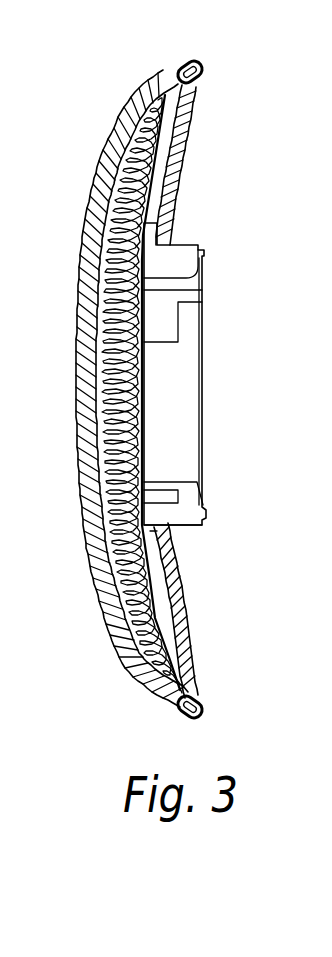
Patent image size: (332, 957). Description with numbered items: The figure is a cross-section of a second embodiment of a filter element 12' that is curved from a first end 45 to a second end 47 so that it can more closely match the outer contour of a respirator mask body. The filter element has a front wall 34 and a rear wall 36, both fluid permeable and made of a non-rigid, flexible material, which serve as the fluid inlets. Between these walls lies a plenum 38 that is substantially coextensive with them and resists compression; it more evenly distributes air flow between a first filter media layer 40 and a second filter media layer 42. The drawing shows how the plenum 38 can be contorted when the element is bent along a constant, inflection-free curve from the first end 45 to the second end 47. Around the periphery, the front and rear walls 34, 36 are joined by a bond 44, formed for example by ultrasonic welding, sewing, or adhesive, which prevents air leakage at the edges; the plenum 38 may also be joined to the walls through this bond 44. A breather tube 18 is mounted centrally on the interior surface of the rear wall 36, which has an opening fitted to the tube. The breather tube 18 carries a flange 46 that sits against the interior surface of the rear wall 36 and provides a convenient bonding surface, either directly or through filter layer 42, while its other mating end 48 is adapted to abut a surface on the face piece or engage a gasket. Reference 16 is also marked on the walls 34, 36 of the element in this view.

The filter element 12' is at (145, 374).
The wall 16 is at (88, 200).
The breather tube 18 is at (189, 236).
The front wall 34 is at (92, 568).
The rear wall 36 is at (181, 183).
The plenum 38 is at (156, 618).
The filter media layer 40 is at (110, 618).
The filter media layer 42 is at (178, 155).
The bond 44 is at (182, 60).
The first end 45 is at (204, 70).
The flange 46 is at (157, 525).
The second end 47 is at (204, 703).
The mating end 48 is at (206, 252).